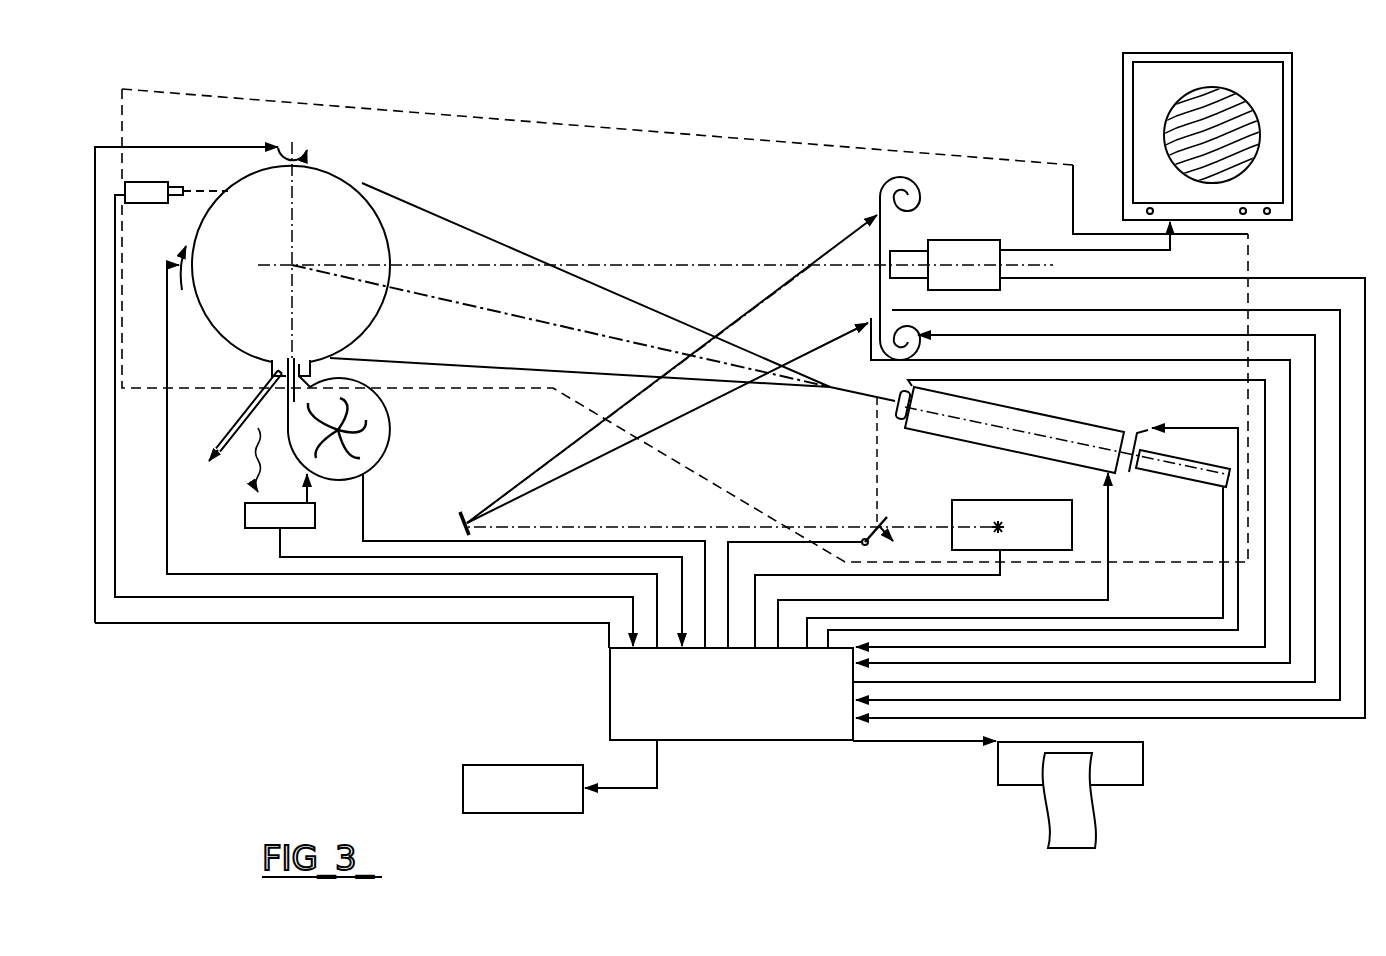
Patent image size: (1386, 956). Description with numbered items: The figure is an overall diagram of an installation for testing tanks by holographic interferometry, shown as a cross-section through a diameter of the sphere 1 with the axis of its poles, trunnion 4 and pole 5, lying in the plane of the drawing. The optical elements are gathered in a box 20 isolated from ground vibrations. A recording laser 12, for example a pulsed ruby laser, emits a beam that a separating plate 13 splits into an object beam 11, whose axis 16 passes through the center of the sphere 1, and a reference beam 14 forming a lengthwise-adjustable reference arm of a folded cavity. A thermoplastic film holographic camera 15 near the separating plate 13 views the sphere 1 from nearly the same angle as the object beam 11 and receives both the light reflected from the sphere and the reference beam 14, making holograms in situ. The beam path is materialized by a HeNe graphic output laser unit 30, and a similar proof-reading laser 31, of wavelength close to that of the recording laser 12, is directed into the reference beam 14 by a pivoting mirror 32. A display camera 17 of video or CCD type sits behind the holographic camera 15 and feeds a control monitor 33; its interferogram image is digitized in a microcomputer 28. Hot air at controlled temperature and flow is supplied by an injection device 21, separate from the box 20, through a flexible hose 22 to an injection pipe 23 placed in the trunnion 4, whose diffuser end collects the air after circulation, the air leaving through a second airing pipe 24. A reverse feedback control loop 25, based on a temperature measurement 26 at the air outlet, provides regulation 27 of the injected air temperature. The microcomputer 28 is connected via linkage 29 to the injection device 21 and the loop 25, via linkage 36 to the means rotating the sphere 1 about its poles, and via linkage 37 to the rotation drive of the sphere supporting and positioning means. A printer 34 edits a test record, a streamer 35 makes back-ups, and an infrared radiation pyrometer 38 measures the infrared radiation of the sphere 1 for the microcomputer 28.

The sphere 1 is at (322, 167).
The trunnion 4 is at (265, 367).
The pole 5 is at (277, 162).
The object beam 11 is at (458, 225).
The recording laser 12 is at (948, 436).
The separating plate 13 is at (862, 406).
The reference beam 14 is at (592, 462).
The thermoplastic film holographic camera 15 is at (900, 170).
The axis of the object beam 16 is at (500, 313).
The display camera 17 is at (960, 248).
The box 20 is at (412, 112).
The injection device 21 is at (390, 430).
The flexible hose 22 is at (262, 403).
The injection pipe 23 is at (292, 360).
The second airing pipe 24 is at (260, 400).
The reverse feedback control loop 25 is at (250, 528).
The temperature measurement 26 is at (257, 478).
The regulation 27 is at (310, 495).
The microcomputer 28 is at (606, 672).
The linkage 29 is at (365, 508).
The graphic output laser unit 30 is at (1193, 470).
The proof-reading laser 31 is at (993, 506).
The pivoting mirror 32 is at (881, 525).
The control monitor 33 is at (1120, 105).
The printer 34 is at (996, 790).
The streamer 35 is at (465, 788).
The linkage 36 is at (276, 623).
The linkage 37 is at (167, 545).
The infrared radiation pyrometer 38 is at (140, 192).